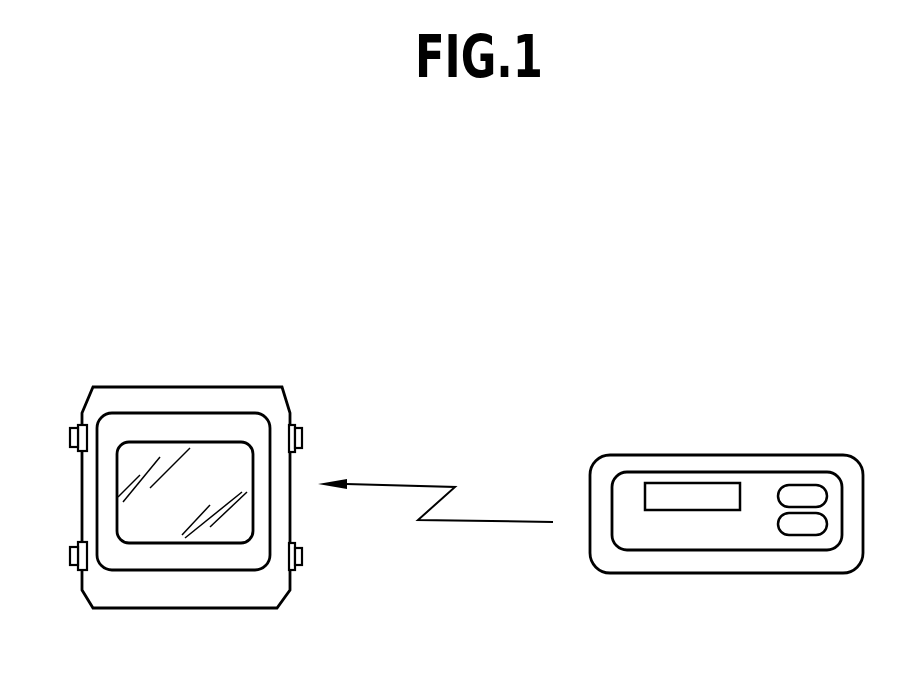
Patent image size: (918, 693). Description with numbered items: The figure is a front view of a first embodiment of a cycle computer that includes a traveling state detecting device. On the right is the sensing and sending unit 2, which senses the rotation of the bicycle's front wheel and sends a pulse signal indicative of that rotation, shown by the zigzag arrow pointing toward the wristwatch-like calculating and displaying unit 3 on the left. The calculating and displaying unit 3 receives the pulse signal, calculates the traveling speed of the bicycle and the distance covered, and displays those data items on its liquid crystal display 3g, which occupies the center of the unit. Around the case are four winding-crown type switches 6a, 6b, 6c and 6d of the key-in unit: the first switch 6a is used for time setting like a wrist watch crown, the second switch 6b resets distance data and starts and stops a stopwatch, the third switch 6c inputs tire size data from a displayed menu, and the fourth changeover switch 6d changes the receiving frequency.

The sensing and sending unit 2 is at (714, 432).
The calculating and displaying unit 3 is at (204, 356).
The liquid crystal display 3g is at (237, 458).
The first winding-crown type switch 6a is at (69, 434).
The second winding-crown type switch 6b is at (69, 560).
The third winding-crown type switch 6c is at (303, 433).
The fourth changeover switch 6d is at (303, 556).